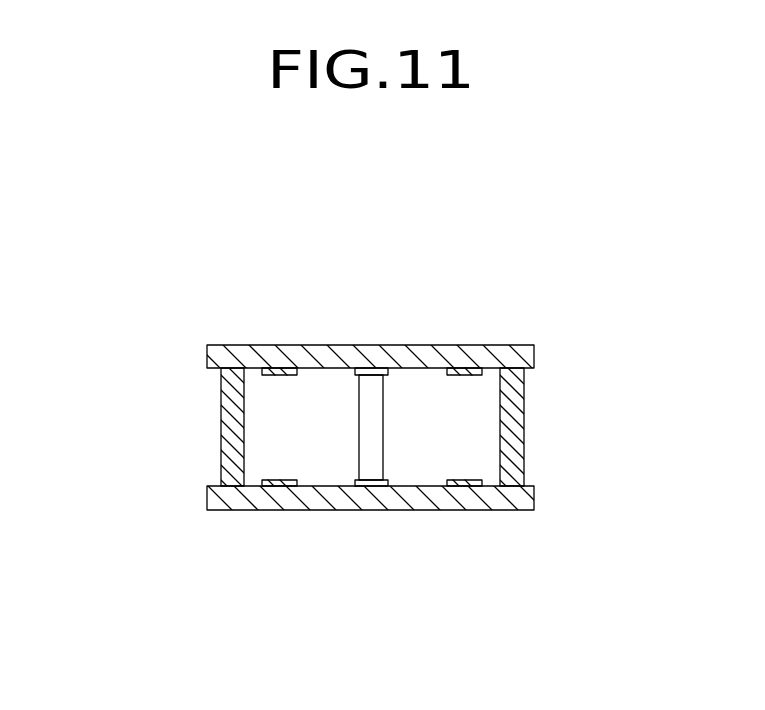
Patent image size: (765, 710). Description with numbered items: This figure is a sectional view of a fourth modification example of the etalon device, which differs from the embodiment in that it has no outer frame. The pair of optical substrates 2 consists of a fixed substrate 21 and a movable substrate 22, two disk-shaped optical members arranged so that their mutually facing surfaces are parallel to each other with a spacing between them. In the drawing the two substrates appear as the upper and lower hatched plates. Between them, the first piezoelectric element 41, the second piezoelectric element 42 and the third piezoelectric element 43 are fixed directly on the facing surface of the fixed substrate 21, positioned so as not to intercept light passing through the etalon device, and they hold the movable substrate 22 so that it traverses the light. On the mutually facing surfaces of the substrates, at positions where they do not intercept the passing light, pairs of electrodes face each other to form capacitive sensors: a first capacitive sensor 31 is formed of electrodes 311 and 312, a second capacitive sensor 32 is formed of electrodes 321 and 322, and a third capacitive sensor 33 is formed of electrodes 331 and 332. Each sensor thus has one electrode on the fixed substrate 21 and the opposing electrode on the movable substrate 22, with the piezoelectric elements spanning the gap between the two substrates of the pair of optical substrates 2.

The pair of optical substrates 2 is at (372, 240).
The fixed substrate 21 is at (358, 358).
The movable substrate 22 is at (330, 495).
The first capacitive sensor 31 is at (108, 312).
The electrode 311 is at (273, 375).
The electrode 312 is at (281, 478).
The second capacitive sensor 32 is at (532, 210).
The electrode 321 is at (388, 374).
The electrode 322 is at (390, 483).
The third capacitive sensor 33 is at (633, 310).
The electrode 331 is at (468, 374).
The electrode 332 is at (459, 477).
The first piezoelectric element 41 is at (223, 452).
The second piezoelectric element 42 is at (365, 443).
The third piezoelectric element 43 is at (518, 452).